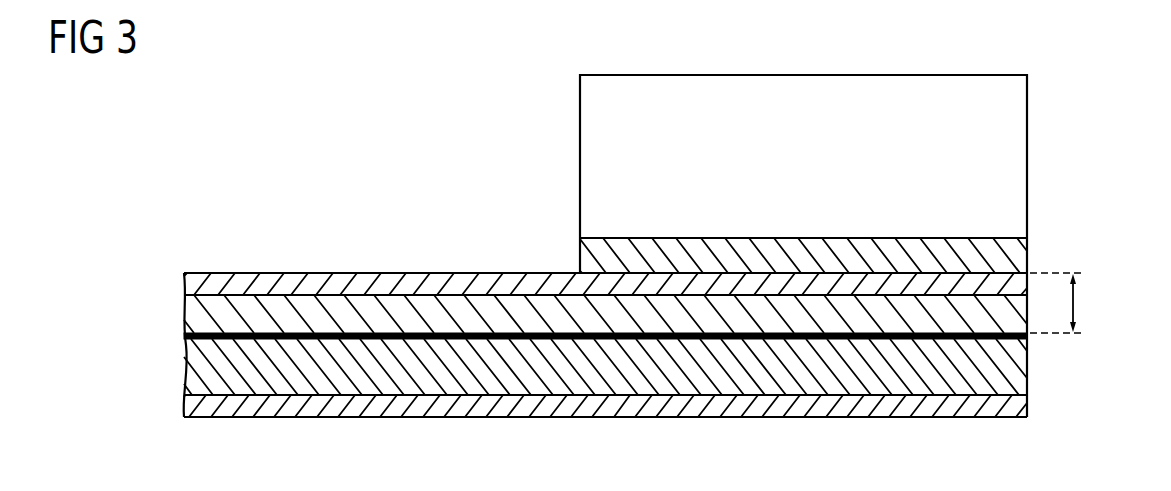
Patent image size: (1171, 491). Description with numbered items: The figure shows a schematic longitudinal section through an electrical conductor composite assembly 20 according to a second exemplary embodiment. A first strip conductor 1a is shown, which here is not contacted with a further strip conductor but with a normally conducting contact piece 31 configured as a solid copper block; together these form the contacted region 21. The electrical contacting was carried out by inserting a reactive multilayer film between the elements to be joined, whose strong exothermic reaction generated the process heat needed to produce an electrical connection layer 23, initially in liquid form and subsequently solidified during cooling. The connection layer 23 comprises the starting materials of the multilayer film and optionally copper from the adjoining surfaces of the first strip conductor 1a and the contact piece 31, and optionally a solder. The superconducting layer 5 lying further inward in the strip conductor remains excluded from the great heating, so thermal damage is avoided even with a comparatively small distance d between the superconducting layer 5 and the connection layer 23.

The electrical conductor composite assembly 20 is at (311, 88).
The electronic component assembly 21 is at (1026, 65).
The normally conducting contact piece 31 is at (1014, 176).
The connection layer 23 is at (1013, 253).
The first strip conductor 1a is at (276, 262).
The superconducting layer 5 is at (1027, 338).
The distance d is at (1075, 303).